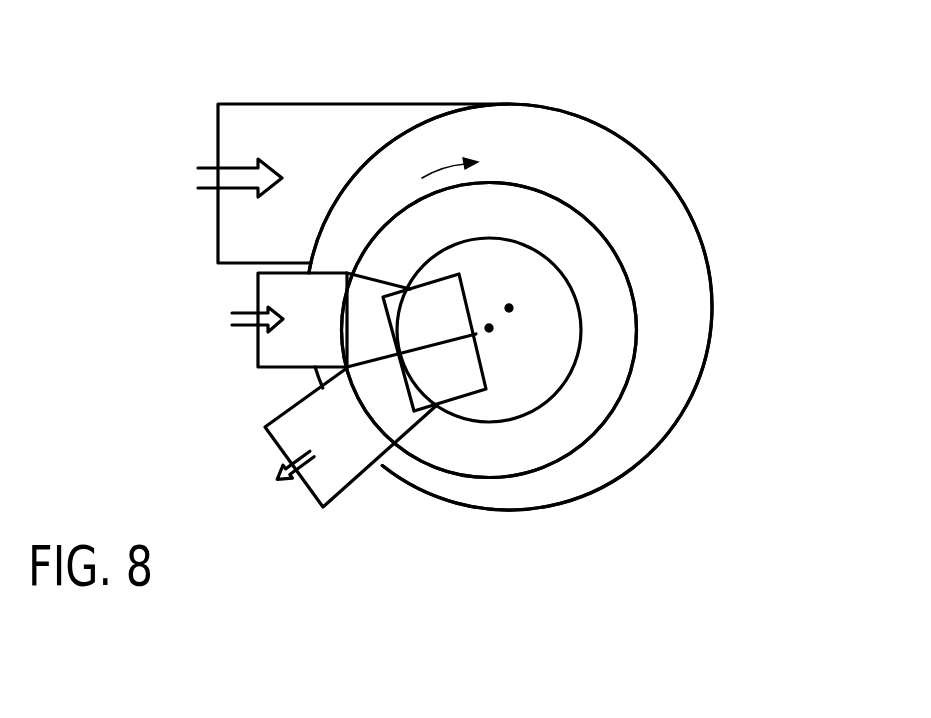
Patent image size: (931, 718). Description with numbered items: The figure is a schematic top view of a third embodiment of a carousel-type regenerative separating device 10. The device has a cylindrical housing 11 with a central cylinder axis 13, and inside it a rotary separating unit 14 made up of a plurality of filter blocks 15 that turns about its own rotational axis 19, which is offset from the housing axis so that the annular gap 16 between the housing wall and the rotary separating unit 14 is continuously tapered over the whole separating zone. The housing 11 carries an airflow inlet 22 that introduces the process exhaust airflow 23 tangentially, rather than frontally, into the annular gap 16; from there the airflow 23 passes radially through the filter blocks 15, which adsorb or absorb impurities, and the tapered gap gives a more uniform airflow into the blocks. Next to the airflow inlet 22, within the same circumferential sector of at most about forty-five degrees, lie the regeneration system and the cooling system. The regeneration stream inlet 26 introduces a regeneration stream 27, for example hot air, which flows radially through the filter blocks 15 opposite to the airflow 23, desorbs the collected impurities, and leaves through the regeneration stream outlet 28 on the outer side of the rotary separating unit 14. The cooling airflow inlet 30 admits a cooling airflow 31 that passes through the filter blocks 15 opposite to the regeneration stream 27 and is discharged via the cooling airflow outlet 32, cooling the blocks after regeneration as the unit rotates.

The separating device 10 is at (743, 80).
The housing 11 is at (700, 232).
The central cylinder axis 13 is at (509, 307).
The rotary separating unit 14 is at (635, 350).
The filter blocks 15 is at (613, 292).
The annular gap 16 is at (672, 392).
The rotational axis 19 is at (489, 328).
The airflow inlet 22 is at (318, 122).
The process exhaust airflow 23 is at (209, 178).
The regeneration stream inlet 26 is at (468, 383).
The regeneration stream 27 is at (277, 488).
The regeneration stream outlet 28 is at (283, 433).
The cooling airflow inlet 30 is at (273, 338).
The cooling airflow 31 is at (238, 322).
The cooling airflow outlet 32 is at (438, 303).